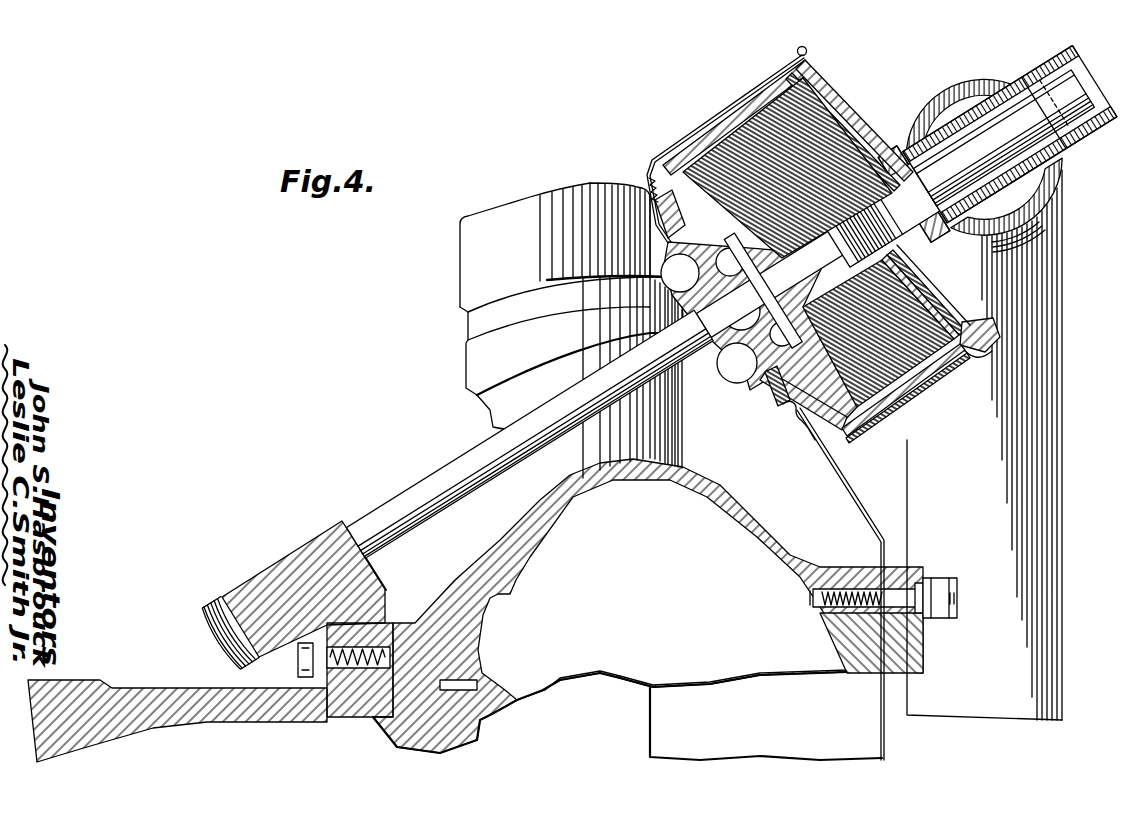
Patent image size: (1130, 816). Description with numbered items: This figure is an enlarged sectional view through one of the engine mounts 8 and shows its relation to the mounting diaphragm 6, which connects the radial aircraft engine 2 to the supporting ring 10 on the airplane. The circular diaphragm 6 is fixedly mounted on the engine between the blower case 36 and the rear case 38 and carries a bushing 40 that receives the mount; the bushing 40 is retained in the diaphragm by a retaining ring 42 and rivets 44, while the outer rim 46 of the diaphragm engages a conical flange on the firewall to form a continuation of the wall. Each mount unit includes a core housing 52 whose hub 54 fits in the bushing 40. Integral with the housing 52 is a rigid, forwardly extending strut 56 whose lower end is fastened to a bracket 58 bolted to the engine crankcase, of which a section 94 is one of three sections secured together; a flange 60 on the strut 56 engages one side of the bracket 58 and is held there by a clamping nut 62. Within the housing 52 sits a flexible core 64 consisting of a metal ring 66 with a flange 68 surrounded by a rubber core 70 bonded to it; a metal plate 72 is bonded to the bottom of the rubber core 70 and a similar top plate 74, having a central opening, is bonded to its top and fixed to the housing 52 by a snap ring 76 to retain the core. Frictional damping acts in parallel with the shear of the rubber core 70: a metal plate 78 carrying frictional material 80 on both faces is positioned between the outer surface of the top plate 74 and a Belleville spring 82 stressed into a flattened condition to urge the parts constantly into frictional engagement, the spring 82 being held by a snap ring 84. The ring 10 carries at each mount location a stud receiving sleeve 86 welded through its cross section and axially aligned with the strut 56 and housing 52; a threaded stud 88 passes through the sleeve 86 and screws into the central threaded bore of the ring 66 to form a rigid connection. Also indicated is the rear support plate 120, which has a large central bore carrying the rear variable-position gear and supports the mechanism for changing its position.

The radial aircraft engine 2 is at (220, 722).
The mounting diaphragm 6 is at (842, 477).
The engine mount 8 is at (462, 455).
The supporting ring 10 is at (958, 157).
The blower case 36 is at (840, 567).
The rear case 38 is at (893, 568).
The bushing 40 is at (767, 391).
The retaining ring 42 is at (796, 411).
The rivets 44 is at (661, 206).
The outer rim 46 is at (800, 45).
The core housing 52 is at (721, 130).
The hub 54 is at (760, 334).
The strut 56 is at (413, 497).
The bracket 58 is at (388, 594).
The flange 60 is at (388, 567).
The clamping nut 62 is at (262, 651).
The flexible core 64 is at (896, 362).
The metal ring 66 is at (850, 128).
The flange 68 is at (904, 387).
The rubber core 70 is at (860, 410).
The metal plate 72 is at (660, 182).
The top plate 74 is at (961, 363).
The snap ring 76 is at (1003, 332).
The metal plate 78 is at (868, 156).
The frictional material 80 is at (937, 284).
The Belleville spring 82 is at (988, 303).
The snap ring 84 is at (812, 76).
The stud receiving sleeve 86 is at (1062, 129).
The threaded stud 88 is at (905, 138).
The crankcase section 94 is at (138, 687).
The rear support plate 120 is at (402, 623).